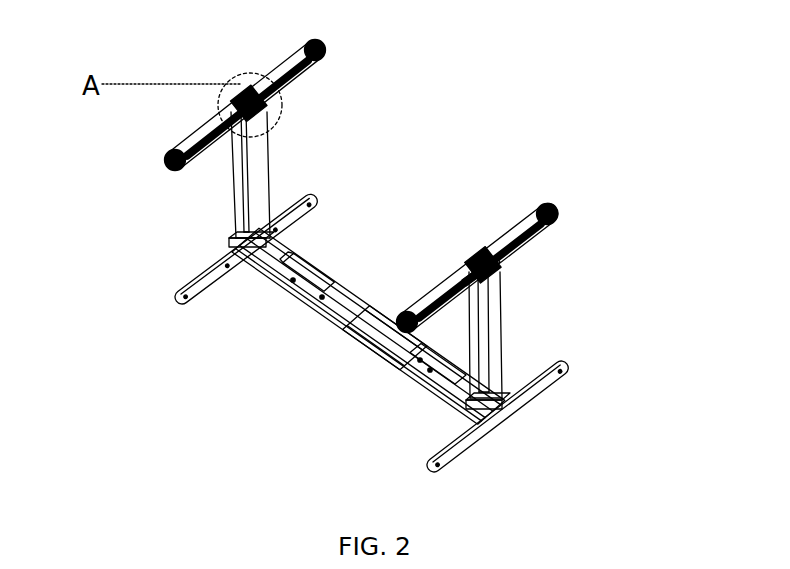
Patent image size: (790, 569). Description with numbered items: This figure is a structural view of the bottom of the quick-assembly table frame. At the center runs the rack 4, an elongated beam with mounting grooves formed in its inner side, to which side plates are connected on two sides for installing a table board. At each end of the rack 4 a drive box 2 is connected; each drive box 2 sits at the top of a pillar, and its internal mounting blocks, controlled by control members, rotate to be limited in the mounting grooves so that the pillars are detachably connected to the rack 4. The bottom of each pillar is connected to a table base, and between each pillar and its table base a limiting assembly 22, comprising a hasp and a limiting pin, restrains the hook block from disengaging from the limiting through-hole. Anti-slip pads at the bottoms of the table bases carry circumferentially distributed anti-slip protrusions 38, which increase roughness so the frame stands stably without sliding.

The drive box 2 is at (268, 252).
The rack 4 is at (316, 320).
The limiting assembly 22 is at (483, 262).
The anti-slip protrusion 38 is at (326, 50).